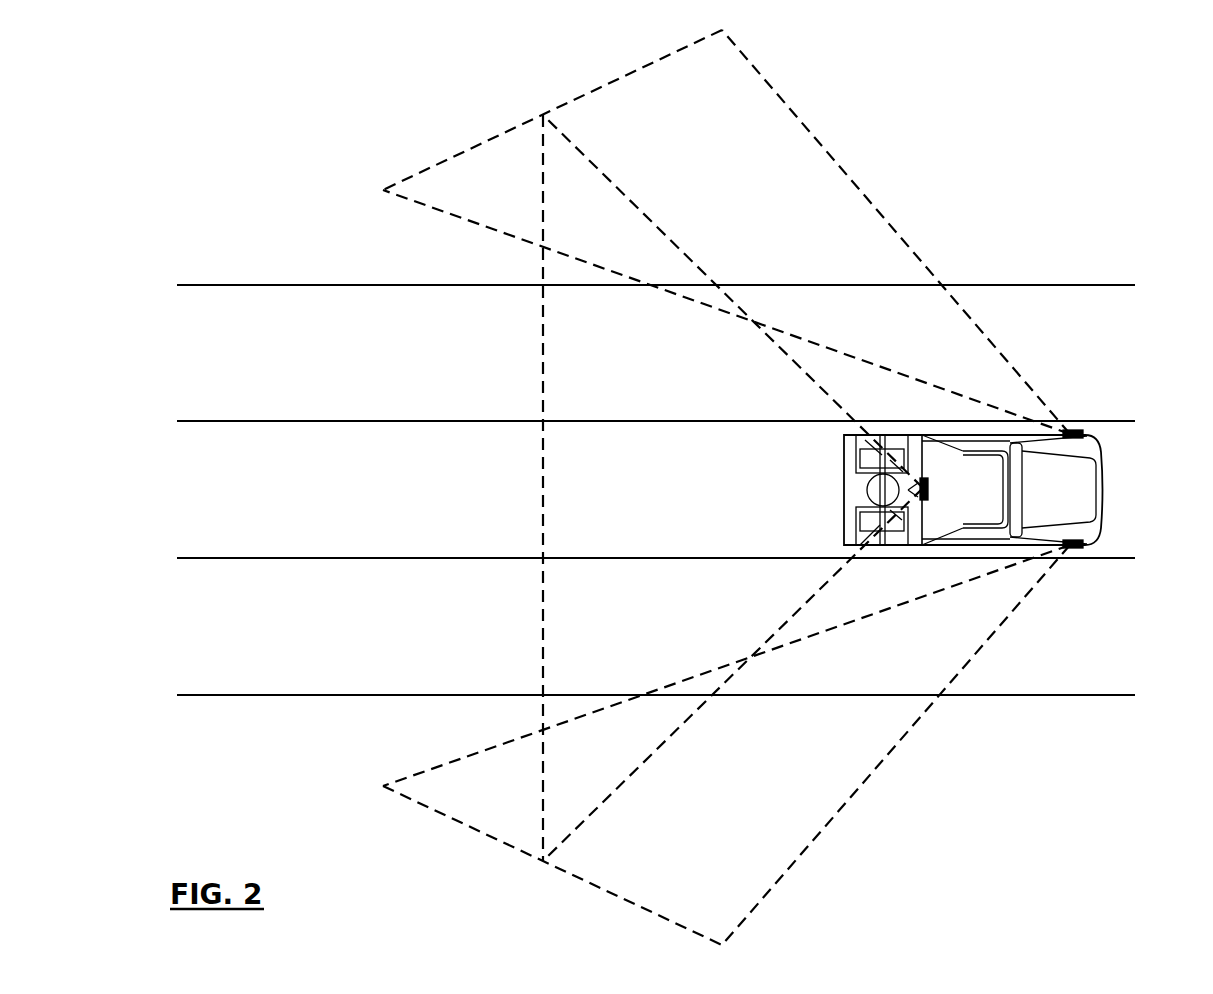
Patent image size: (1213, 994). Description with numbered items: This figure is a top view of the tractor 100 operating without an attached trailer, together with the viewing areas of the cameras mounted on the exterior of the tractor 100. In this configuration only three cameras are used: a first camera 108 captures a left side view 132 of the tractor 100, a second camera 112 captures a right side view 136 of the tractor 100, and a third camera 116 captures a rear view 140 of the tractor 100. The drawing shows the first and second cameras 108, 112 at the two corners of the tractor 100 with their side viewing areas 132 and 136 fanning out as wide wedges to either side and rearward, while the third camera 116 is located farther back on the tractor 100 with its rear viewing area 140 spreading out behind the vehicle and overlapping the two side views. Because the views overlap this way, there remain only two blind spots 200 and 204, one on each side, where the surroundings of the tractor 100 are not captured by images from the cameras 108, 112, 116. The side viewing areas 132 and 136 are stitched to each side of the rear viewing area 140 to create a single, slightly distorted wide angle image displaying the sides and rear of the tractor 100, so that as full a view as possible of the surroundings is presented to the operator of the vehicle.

The tractor 100 is at (1100, 490).
The first camera 108 is at (1066, 430).
The second camera 112 is at (1072, 548).
The third camera 116 is at (925, 480).
The left side view 132 is at (513, 128).
The right side view 136 is at (600, 892).
The rear view 140 is at (543, 795).
The blind spot 200 is at (907, 403).
The blind spot 204 is at (898, 575).